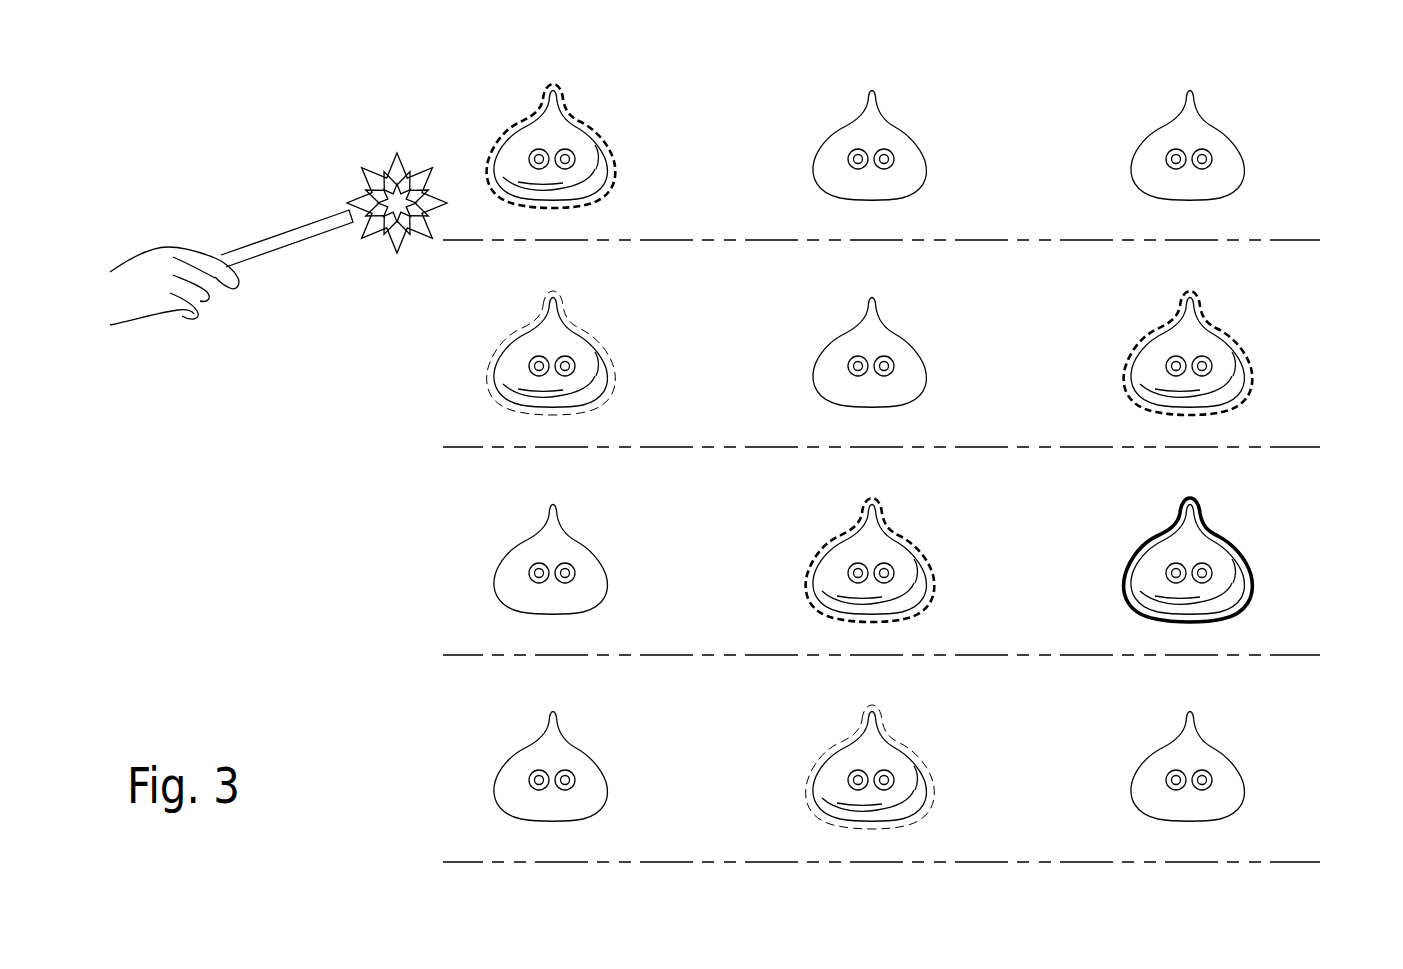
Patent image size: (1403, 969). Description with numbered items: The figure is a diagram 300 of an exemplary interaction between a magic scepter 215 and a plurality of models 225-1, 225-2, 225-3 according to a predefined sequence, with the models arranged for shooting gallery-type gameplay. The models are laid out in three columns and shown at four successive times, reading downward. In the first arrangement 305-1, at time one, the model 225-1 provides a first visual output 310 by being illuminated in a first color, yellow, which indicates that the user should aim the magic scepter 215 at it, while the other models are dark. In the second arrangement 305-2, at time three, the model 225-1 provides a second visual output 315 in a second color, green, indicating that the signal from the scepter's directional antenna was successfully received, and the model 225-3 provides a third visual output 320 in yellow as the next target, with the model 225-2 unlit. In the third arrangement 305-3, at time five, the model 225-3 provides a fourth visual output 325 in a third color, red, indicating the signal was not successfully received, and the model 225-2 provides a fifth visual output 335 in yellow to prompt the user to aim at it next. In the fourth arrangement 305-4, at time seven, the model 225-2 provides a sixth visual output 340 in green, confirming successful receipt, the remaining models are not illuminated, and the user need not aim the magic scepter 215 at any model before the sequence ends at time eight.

The magic scepter 215 is at (292, 232).
The diagram 300 is at (286, 637).
The model 225-1 is at (586, 52).
The model 225-2 is at (904, 52).
The model 225-3 is at (1222, 52).
The first arrangement 305-1 is at (915, 162).
The second arrangement 305-2 is at (915, 369).
The third arrangement 305-3 is at (915, 577).
The fourth arrangement 305-4 is at (915, 784).
The first visual output 310 is at (522, 136).
The second visual output 315 is at (522, 338).
The third visual output 320 is at (1160, 340).
The fourth visual output 325 is at (1158, 548).
The fifth visual output 335 is at (842, 548).
The sixth visual output 340 is at (842, 757).